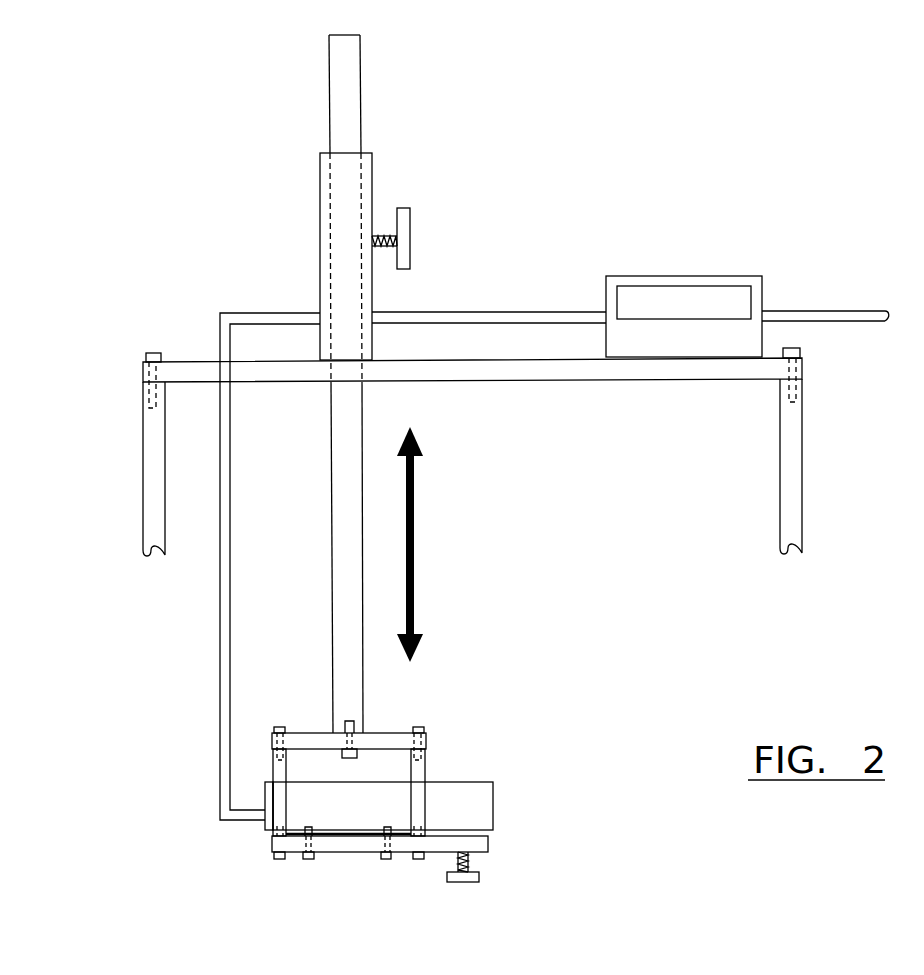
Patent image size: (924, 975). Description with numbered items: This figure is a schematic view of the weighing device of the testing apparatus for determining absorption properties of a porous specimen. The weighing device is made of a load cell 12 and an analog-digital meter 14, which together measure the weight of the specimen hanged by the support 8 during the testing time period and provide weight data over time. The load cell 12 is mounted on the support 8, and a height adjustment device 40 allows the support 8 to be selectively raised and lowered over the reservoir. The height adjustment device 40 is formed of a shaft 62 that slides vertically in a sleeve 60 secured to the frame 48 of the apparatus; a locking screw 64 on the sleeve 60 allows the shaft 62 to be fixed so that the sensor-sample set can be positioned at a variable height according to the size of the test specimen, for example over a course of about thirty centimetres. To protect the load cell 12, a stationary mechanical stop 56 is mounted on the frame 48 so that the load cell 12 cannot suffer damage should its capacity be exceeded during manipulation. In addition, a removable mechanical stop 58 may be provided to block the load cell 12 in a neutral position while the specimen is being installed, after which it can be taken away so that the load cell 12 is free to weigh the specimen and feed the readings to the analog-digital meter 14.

The support 8 is at (243, 860).
The load cell 12 is at (477, 798).
The analog-digital meter 14 is at (703, 276).
The height adjustment device 40 is at (252, 234).
The frame 48 is at (793, 450).
The stationary mechanical stop 56 is at (478, 843).
The removable mechanical stop 58 is at (453, 877).
The sleeve 60 is at (370, 175).
The shaft 62 is at (350, 70).
The locking screw 64 is at (403, 228).